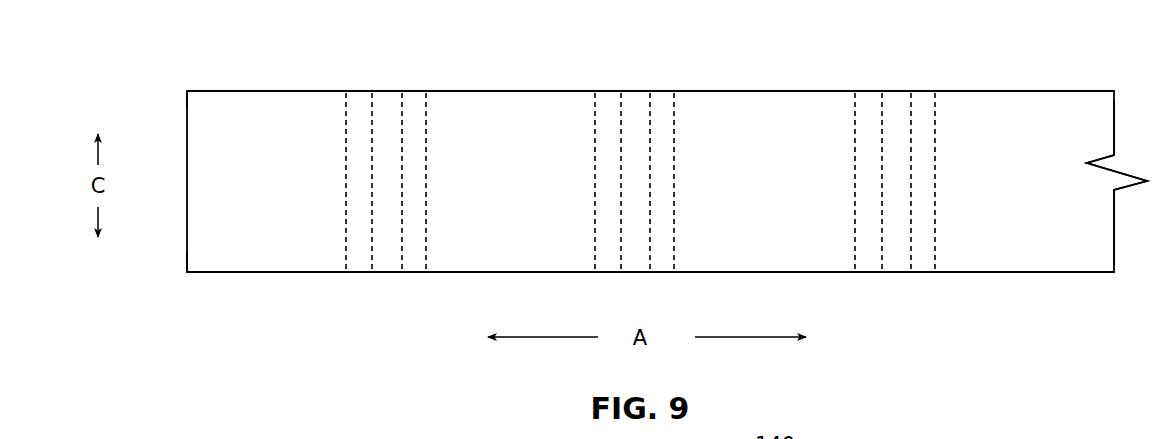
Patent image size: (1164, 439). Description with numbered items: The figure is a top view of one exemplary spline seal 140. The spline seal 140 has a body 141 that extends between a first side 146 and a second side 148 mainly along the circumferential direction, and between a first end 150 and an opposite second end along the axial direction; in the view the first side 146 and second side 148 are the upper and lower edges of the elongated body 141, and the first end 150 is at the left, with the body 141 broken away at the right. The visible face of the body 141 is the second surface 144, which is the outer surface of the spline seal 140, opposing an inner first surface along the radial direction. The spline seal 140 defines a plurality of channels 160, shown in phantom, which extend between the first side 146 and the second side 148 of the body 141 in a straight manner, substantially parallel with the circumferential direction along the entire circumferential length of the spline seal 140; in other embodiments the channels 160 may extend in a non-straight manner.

The spline seal 140 is at (791, 78).
The body 141 is at (243, 92).
The second surface 144 is at (1046, 117).
The first side 146 is at (167, 98).
The second side 148 is at (167, 263).
The first end 150 is at (186, 290).
The channels 160 is at (359, 78).